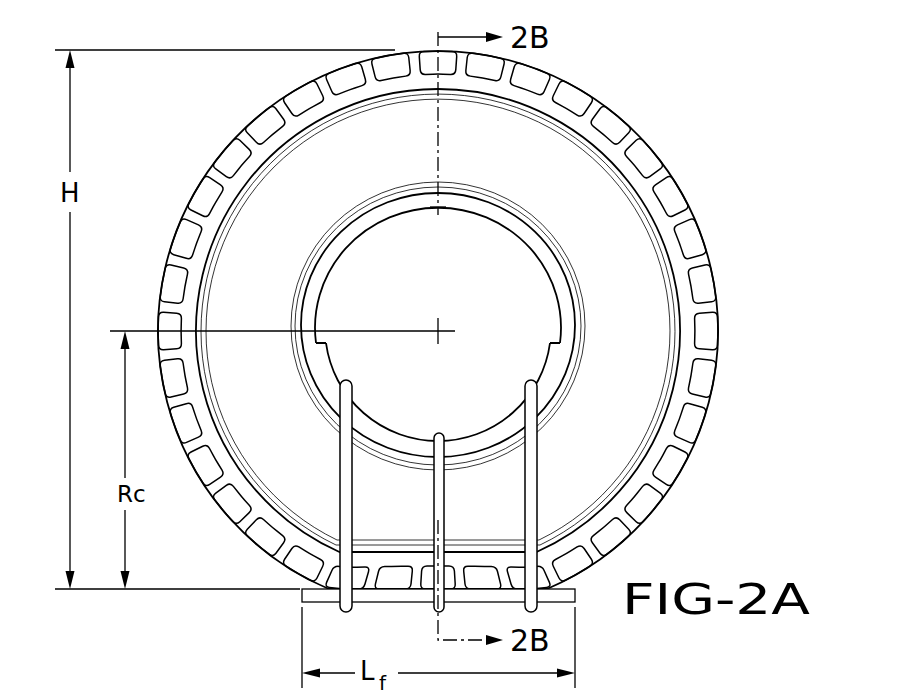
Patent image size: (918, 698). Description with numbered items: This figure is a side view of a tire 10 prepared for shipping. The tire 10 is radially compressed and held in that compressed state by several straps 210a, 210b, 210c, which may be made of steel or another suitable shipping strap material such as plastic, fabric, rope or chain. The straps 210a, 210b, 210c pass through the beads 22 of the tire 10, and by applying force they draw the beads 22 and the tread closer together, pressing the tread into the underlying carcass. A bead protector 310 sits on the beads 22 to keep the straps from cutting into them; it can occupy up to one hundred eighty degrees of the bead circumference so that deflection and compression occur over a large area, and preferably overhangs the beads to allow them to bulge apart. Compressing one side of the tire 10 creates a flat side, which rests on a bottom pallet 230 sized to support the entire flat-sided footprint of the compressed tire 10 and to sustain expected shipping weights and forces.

The tire 10 is at (606, 212).
The beads 22 is at (517, 224).
The bead protector 310 is at (552, 364).
The strap 210a is at (345, 468).
The strap 210b is at (531, 468).
The strap 210c is at (432, 493).
The bottom pallet 230 is at (302, 590).